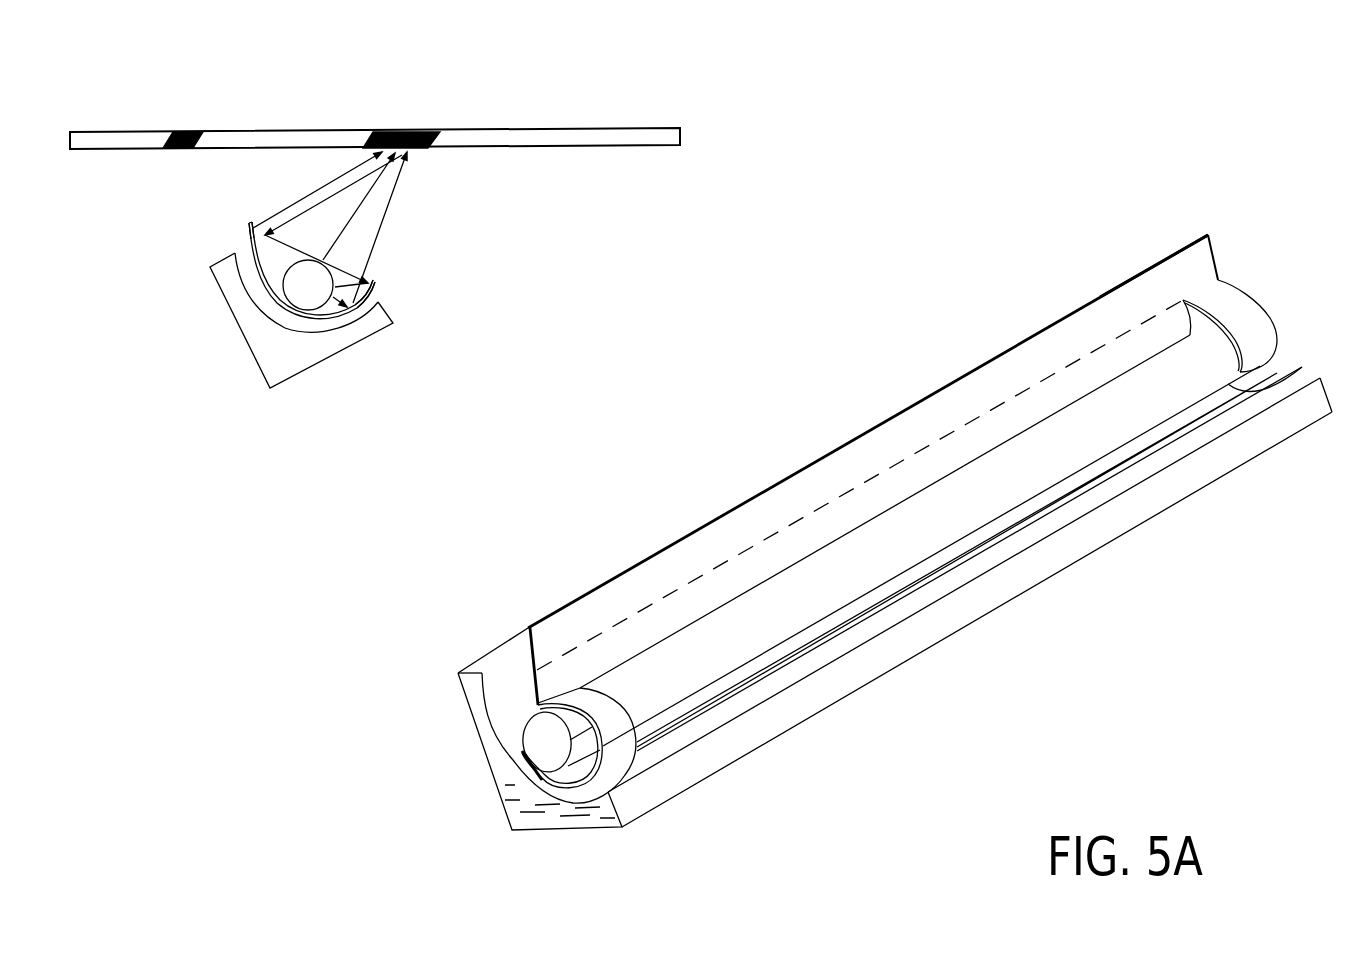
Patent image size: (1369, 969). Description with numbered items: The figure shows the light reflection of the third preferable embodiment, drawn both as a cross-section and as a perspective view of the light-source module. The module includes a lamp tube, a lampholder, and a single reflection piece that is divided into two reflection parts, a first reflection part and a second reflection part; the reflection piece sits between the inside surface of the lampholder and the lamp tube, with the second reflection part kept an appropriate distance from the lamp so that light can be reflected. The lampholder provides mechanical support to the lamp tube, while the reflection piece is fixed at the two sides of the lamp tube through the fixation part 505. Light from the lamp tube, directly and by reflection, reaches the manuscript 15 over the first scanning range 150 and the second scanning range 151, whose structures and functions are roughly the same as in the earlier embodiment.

The manuscript 15 is at (575, 135).
The first scanning range 150 is at (405, 130).
The second scanning range 151 is at (187, 130).
The fixation part 505 is at (615, 718).